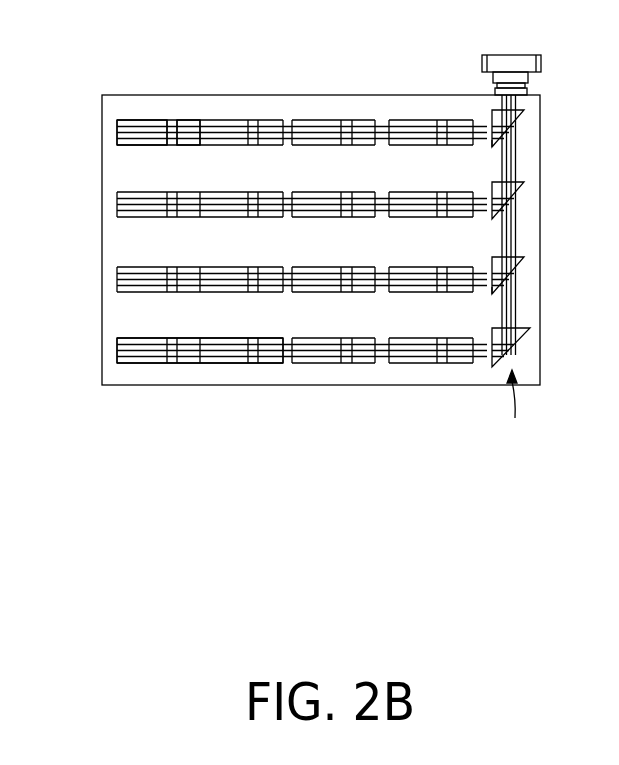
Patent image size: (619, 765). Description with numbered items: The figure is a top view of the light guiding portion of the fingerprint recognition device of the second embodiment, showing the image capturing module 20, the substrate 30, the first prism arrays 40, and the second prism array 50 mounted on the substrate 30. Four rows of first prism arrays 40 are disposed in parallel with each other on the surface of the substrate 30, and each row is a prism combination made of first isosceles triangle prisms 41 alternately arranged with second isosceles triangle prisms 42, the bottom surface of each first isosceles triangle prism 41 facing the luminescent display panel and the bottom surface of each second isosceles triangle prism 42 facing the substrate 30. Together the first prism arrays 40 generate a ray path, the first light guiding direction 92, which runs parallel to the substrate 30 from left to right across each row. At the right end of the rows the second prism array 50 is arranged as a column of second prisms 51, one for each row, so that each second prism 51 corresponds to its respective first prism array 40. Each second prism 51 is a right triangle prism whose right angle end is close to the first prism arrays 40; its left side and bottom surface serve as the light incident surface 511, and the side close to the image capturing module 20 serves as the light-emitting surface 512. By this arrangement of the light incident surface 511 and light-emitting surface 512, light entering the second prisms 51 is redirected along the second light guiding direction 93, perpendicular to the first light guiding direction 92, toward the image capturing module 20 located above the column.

The image capturing module 20 is at (536, 56).
The substrate 30 is at (108, 108).
The first prism arrays 40 is at (118, 130).
The first isosceles triangle prism 41 is at (133, 122).
The second isosceles triangle prism 42 is at (187, 122).
The second prism array 50 is at (514, 412).
The second prism 51 is at (516, 124).
The light incident surface 511 is at (495, 146).
The light-emitting surface 512 is at (521, 111).
The first light guiding direction 92 is at (187, 365).
The second light guiding direction 93 is at (526, 183).